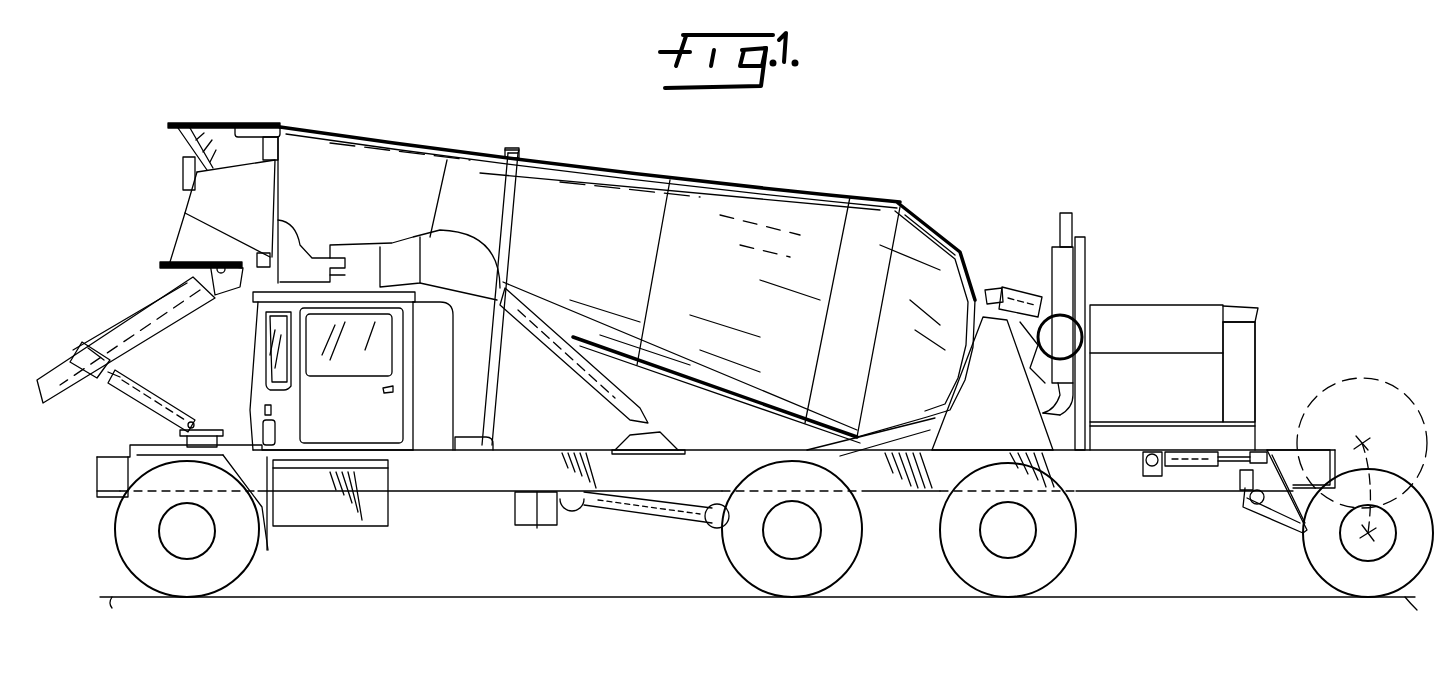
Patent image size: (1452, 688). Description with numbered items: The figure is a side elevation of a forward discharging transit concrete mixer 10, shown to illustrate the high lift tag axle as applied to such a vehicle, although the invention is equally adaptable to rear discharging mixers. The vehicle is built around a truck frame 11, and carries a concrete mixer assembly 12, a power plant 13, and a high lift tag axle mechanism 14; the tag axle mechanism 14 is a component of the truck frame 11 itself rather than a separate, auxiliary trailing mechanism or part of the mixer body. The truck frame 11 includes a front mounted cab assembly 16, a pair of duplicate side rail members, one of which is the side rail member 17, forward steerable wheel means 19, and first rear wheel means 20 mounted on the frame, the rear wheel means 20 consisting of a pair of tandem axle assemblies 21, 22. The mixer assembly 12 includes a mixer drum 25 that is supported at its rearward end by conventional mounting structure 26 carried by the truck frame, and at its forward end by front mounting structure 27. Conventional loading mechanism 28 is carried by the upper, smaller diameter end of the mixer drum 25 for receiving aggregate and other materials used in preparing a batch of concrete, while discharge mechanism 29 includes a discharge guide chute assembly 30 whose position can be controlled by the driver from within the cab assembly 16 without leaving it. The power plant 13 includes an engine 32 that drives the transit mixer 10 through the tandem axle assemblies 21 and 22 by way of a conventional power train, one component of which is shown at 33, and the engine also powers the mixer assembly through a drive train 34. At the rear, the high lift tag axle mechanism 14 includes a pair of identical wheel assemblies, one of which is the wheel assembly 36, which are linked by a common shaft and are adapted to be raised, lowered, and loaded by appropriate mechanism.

The forward discharging transit concrete mixer 10 is at (735, 353).
The truck frame 11 is at (455, 505).
The concrete mixer assembly 12 is at (546, 158).
The power plant 13 is at (1163, 303).
The high lift tag axle mechanism 14 is at (1260, 520).
The cab assembly 16 is at (265, 341).
The side rail member 17 is at (445, 478).
The forward steerable wheel means 19 is at (130, 565).
The first rear wheel means 20 is at (932, 534).
The tandem axle assembly 21 is at (723, 553).
The tandem axle assembly 22 is at (1078, 540).
The mixer drum 25 is at (745, 178).
The mounting structure 26 is at (1022, 428).
The front mounting structure 27 is at (569, 366).
The loading mechanism 28 is at (178, 141).
The discharge mechanism 29 is at (184, 233).
The discharge guide chute assembly 30 is at (73, 389).
The engine 32 is at (1245, 373).
The power train component 33 is at (560, 515).
The drive train 34 is at (1030, 340).
The wheel assembly 36 is at (1308, 556).